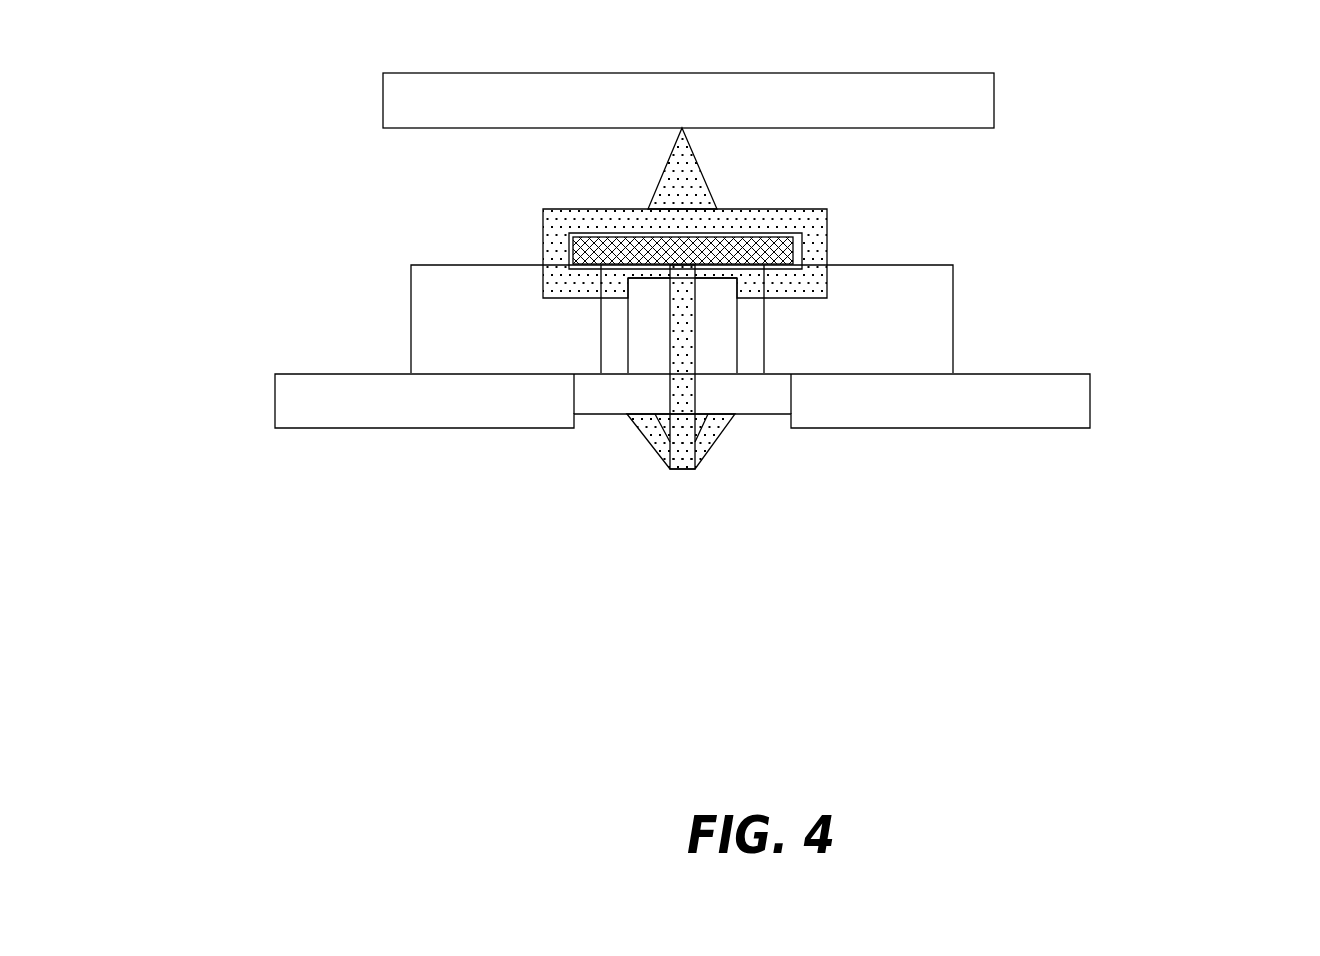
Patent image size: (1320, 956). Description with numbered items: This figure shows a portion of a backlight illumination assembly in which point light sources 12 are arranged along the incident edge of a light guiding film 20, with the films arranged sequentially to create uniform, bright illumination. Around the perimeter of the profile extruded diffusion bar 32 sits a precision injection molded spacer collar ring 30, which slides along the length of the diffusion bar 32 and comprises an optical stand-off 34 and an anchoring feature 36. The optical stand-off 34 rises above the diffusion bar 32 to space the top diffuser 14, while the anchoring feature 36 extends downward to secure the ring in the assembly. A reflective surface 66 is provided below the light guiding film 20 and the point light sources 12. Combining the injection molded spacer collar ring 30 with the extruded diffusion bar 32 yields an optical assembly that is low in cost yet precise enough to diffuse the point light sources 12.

The top diffuser 14 is at (977, 95).
The optical stand-off 34 is at (672, 173).
The spacer collar ring 30 is at (876, 218).
The diffusion bar 32 is at (778, 248).
The light guiding film 20 is at (449, 327).
The point light source 12 is at (718, 350).
The reflective surface 66 is at (1042, 396).
The anchoring feature 36 is at (664, 462).